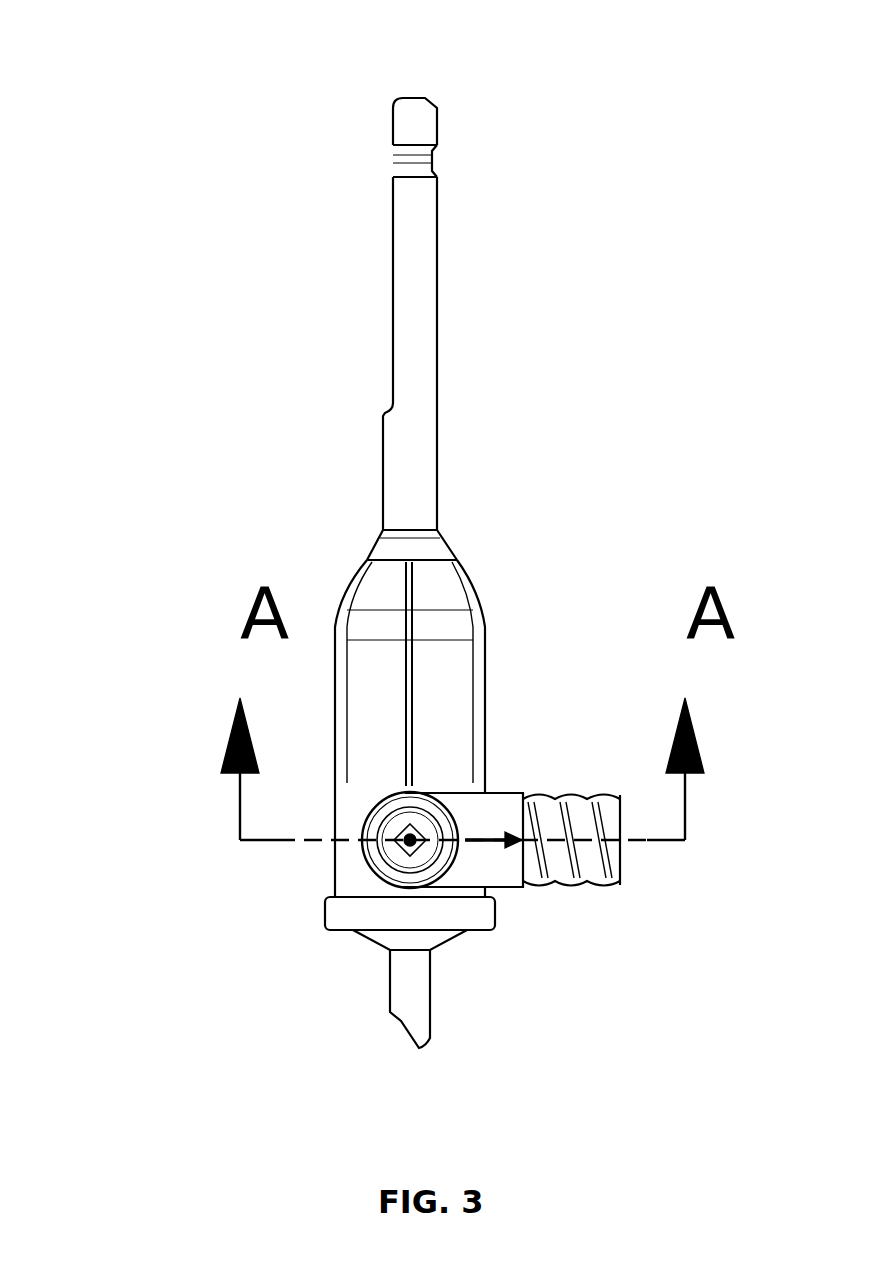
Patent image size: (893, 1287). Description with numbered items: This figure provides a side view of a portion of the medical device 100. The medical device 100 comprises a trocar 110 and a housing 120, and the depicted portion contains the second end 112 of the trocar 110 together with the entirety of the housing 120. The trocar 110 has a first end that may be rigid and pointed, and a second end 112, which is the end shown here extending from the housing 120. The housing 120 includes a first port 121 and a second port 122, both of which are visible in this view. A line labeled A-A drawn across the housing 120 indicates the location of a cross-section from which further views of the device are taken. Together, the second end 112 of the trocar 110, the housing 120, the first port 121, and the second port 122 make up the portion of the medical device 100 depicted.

The medical device 100 is at (163, 47).
The trocar 110 is at (407, 1030).
The second end 112 is at (390, 137).
The housing 120 is at (483, 610).
The first port 121 is at (370, 848).
The second port 122 is at (598, 795).